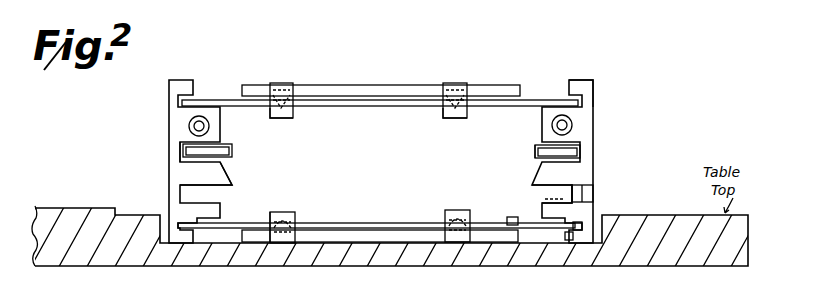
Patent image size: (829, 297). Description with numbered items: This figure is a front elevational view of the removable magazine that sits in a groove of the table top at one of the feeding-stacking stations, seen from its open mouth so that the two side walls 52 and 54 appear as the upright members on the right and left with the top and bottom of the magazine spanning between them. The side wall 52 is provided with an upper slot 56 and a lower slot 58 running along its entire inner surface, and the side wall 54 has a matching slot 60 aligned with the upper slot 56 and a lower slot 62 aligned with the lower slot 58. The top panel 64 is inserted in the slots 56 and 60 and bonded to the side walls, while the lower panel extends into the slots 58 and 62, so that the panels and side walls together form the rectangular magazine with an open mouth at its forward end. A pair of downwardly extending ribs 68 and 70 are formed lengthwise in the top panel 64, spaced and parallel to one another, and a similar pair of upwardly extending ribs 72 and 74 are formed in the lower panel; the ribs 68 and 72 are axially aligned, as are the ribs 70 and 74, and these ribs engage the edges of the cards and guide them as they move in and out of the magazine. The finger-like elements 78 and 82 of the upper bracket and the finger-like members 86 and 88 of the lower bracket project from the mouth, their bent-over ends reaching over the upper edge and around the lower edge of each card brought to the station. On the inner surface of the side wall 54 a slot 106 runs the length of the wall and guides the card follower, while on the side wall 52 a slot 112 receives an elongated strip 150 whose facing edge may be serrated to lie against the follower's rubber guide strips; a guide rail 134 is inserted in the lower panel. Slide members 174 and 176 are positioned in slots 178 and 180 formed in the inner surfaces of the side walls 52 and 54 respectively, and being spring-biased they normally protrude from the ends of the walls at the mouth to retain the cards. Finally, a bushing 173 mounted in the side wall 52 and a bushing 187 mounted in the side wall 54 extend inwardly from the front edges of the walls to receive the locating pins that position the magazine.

The side wall 52 is at (593, 152).
The side wall 54 is at (180, 170).
The upper slot 56 is at (596, 101).
The lower slot 58 is at (572, 242).
The slot 60 is at (182, 103).
The lower slot 62 is at (176, 224).
The top panel 64 is at (533, 97).
The downwardly extending rib 68 is at (466, 88).
The downwardly extending rib 70 is at (290, 116).
The upwardly extending rib 72 is at (456, 243).
The upwardly extending rib 74 is at (297, 213).
The finger-like element 78 is at (449, 118).
The finger-like element 82 is at (275, 119).
The finger-like member 86 is at (446, 211).
The finger-like member 88 is at (266, 212).
The slot 106 is at (207, 194).
The slot 112 is at (584, 193).
The guide rail 134 is at (509, 216).
The elongated strip 150 is at (538, 199).
The bushing 173 is at (573, 125).
The slide member 174 is at (535, 152).
The slide member 176 is at (232, 151).
The slot 178 is at (582, 155).
The slot 180 is at (181, 150).
The bushing 187 is at (189, 126).